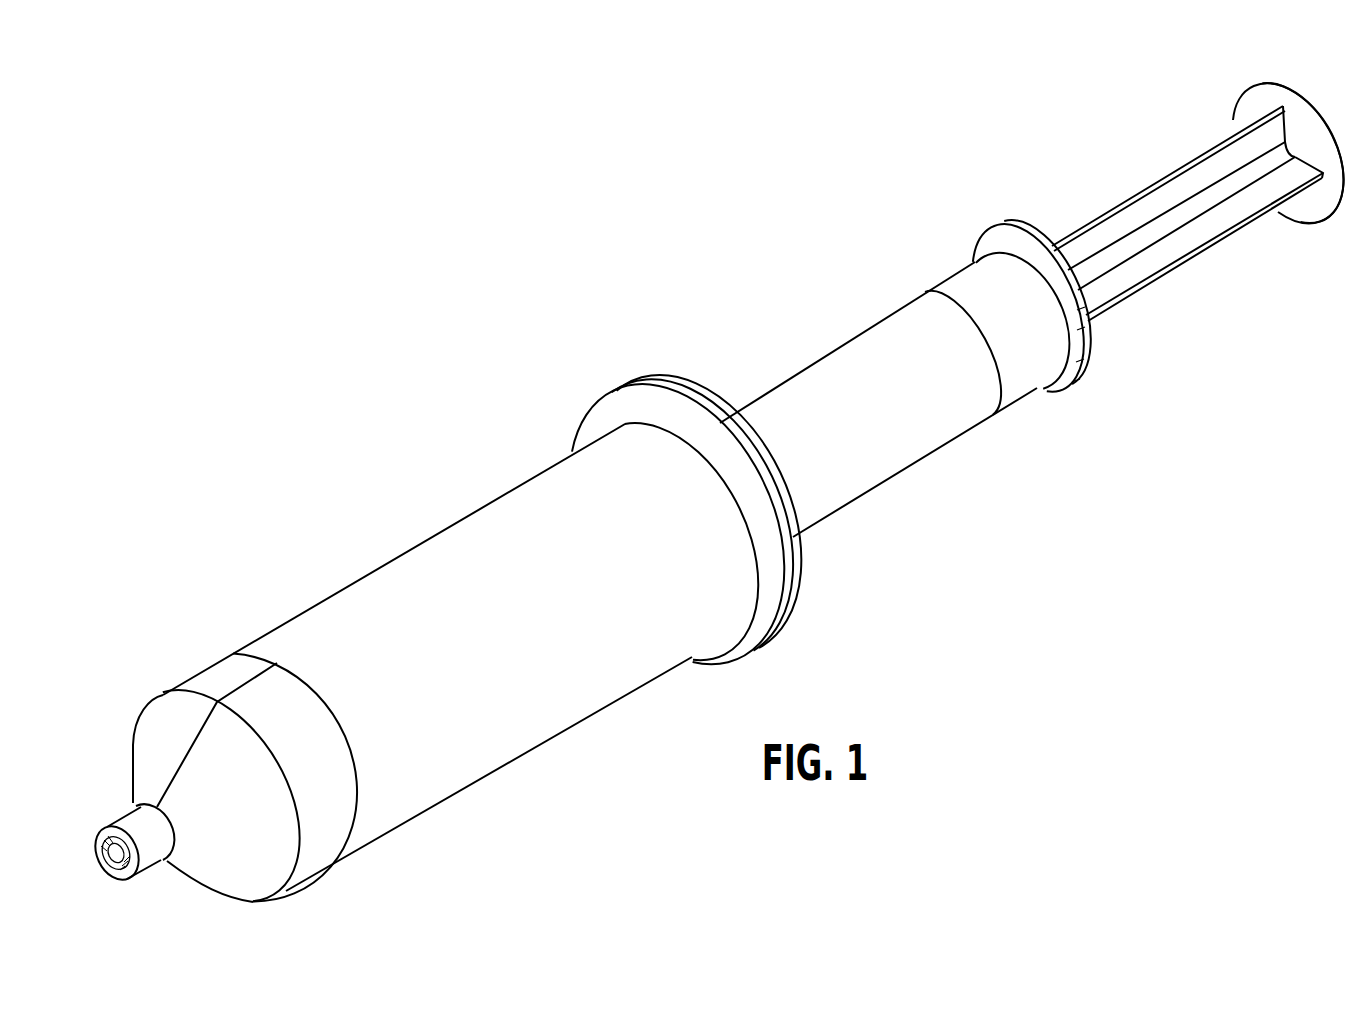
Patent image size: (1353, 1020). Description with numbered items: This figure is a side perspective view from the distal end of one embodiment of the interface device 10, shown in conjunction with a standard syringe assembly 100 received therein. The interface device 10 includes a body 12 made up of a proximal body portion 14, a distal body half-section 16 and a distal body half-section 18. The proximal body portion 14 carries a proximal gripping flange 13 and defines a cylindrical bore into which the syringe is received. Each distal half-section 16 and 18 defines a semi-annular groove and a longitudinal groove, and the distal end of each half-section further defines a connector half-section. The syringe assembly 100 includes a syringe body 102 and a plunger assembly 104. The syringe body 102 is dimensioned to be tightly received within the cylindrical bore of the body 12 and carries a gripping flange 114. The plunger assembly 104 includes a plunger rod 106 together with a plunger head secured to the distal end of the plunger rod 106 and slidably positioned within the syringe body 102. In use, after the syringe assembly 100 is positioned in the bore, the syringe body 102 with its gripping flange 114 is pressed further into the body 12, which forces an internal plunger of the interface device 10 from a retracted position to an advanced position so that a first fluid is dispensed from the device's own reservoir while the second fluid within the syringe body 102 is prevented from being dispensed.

The interface device 10 is at (345, 580).
The body 12 is at (480, 520).
The proximal gripping flange 13 is at (787, 606).
The proximal body portion 14 is at (582, 712).
The distal body half-section 16 is at (160, 713).
The distal body half-section 18 is at (318, 862).
The syringe assembly 100 is at (778, 375).
The syringe body 102 is at (878, 483).
The plunger assembly 104 is at (1222, 256).
The plunger rod 106 is at (1112, 228).
The gripping flange 114 is at (1082, 348).